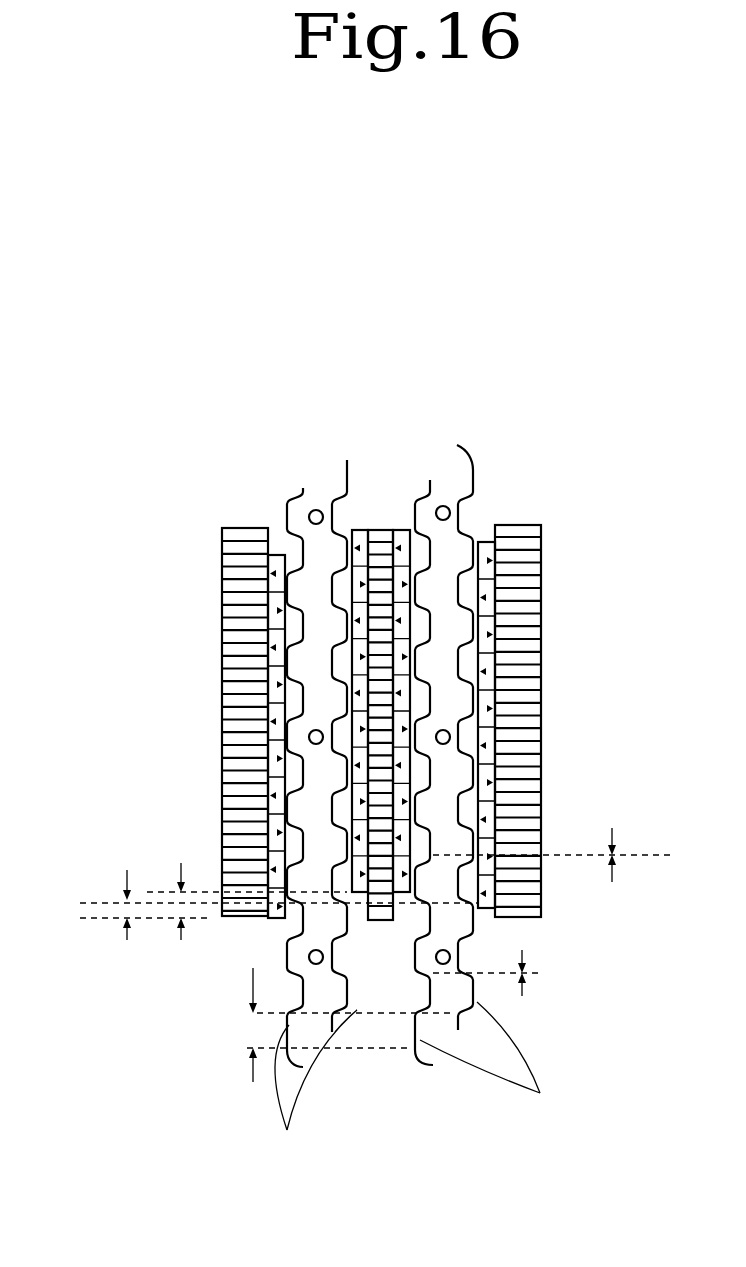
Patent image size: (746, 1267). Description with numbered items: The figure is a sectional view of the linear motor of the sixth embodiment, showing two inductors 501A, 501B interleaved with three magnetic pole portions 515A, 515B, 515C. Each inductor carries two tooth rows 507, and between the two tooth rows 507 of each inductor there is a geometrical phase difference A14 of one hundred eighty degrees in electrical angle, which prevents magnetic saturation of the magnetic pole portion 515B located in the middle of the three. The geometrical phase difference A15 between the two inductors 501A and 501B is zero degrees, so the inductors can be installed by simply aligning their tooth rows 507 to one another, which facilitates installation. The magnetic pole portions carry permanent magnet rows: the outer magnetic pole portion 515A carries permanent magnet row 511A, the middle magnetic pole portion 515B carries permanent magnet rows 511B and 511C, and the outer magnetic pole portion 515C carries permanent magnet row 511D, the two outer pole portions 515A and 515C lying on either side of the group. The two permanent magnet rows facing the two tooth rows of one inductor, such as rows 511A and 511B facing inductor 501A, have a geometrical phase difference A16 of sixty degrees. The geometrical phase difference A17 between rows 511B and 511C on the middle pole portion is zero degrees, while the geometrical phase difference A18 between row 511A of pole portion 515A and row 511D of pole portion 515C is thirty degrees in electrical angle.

The inductor 501A is at (303, 488).
The inductor 501B is at (453, 475).
The magnetic pole portion 515A is at (233, 578).
The magnetic pole portion 515B is at (381, 528).
The magnetic pole portion 515C is at (527, 549).
The permanent magnet row 511A is at (283, 920).
The permanent magnet row 511B is at (358, 892).
The permanent magnet row 511C is at (405, 892).
The permanent magnet row 511D is at (490, 908).
The tooth row 507 is at (427, 1093).
The geometrical phase difference A14 is at (300, 1025).
The geometrical phase difference A15 is at (519, 973).
The geometrical phase difference A16 is at (245, 857).
The geometrical phase difference A17 is at (551, 838).
The geometrical phase difference A18 is at (257, 885).